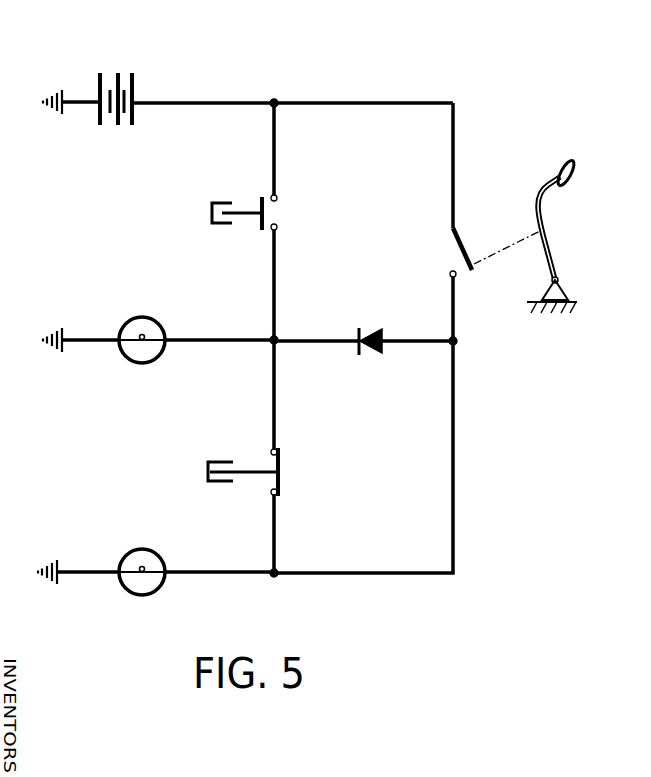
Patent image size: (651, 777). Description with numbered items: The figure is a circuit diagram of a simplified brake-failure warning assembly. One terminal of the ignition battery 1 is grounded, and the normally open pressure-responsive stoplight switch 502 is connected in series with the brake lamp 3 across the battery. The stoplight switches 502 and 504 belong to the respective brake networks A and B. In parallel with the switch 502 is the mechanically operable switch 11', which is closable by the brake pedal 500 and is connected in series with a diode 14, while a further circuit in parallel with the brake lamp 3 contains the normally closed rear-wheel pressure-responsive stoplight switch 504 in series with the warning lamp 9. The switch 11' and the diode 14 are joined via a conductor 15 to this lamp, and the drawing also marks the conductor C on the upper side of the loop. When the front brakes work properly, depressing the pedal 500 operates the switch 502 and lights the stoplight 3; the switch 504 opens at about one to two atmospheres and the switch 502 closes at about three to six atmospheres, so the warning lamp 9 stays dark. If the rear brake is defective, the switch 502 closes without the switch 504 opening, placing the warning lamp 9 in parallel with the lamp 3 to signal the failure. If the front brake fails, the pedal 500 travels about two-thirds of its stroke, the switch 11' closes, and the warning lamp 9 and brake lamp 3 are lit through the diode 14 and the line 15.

The ignition battery 1 is at (116, 42).
The network A is at (223, 80).
The network B is at (273, 397).
The conductor C is at (458, 142).
The switch 11' is at (464, 252).
The brake pedal 500 is at (543, 227).
The stoplight switch 502 is at (267, 217).
The rear-wheel stoplight switch 504 is at (282, 477).
The brake lamp 3 is at (140, 363).
The warning lamp 9 is at (145, 595).
The diode 14 is at (370, 350).
The conductor 15 is at (453, 467).